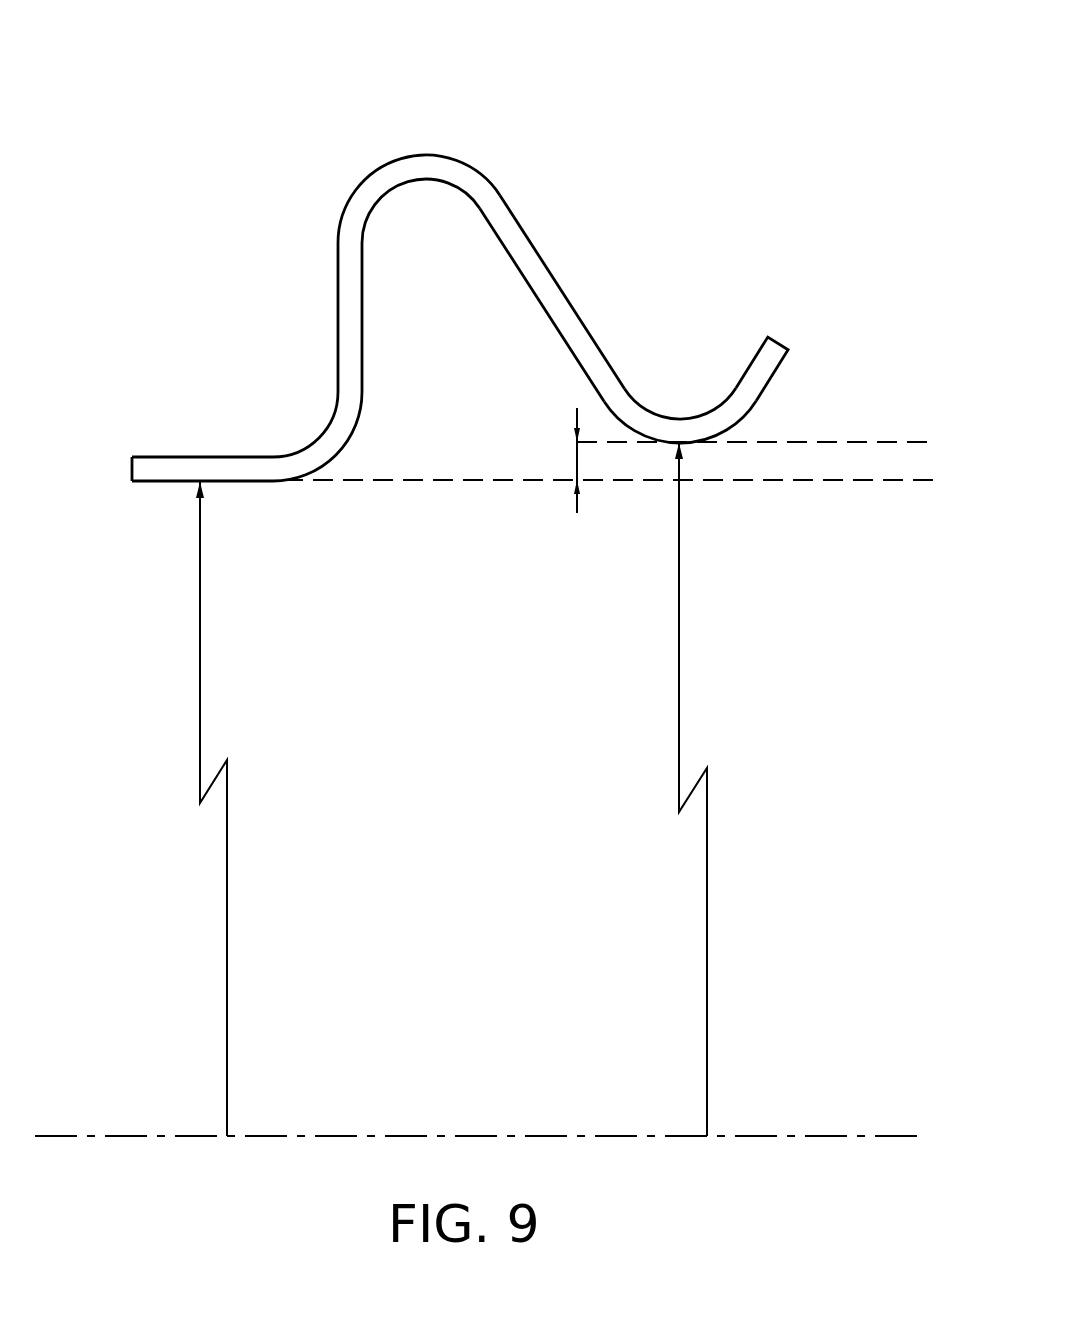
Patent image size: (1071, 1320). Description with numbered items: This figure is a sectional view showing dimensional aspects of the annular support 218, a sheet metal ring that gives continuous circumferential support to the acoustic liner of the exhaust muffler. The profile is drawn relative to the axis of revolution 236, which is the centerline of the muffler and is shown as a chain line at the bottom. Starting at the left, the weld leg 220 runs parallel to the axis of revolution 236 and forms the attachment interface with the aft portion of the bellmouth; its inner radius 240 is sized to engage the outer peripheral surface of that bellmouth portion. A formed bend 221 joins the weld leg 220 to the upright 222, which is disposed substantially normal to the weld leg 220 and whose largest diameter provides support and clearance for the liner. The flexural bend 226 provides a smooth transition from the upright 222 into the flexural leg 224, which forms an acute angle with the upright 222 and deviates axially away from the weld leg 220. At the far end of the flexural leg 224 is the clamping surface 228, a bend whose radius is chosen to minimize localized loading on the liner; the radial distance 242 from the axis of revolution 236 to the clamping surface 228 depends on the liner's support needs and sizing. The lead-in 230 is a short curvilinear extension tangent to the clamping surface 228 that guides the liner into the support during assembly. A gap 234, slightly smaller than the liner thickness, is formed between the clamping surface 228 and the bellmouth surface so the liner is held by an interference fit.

The annular support 218 is at (448, 127).
The weld leg 220 is at (149, 483).
The formed bend 221 is at (320, 432).
The upright 222 is at (337, 292).
The flexural leg 224 is at (528, 236).
The flexural bend 226 is at (352, 196).
The clamping surface 228 is at (683, 445).
The lead-in 230 is at (748, 361).
The gap 234 is at (575, 462).
The axis of revolution 236 is at (352, 1134).
The inner radius 240 is at (199, 680).
The radial distance 242 is at (680, 700).